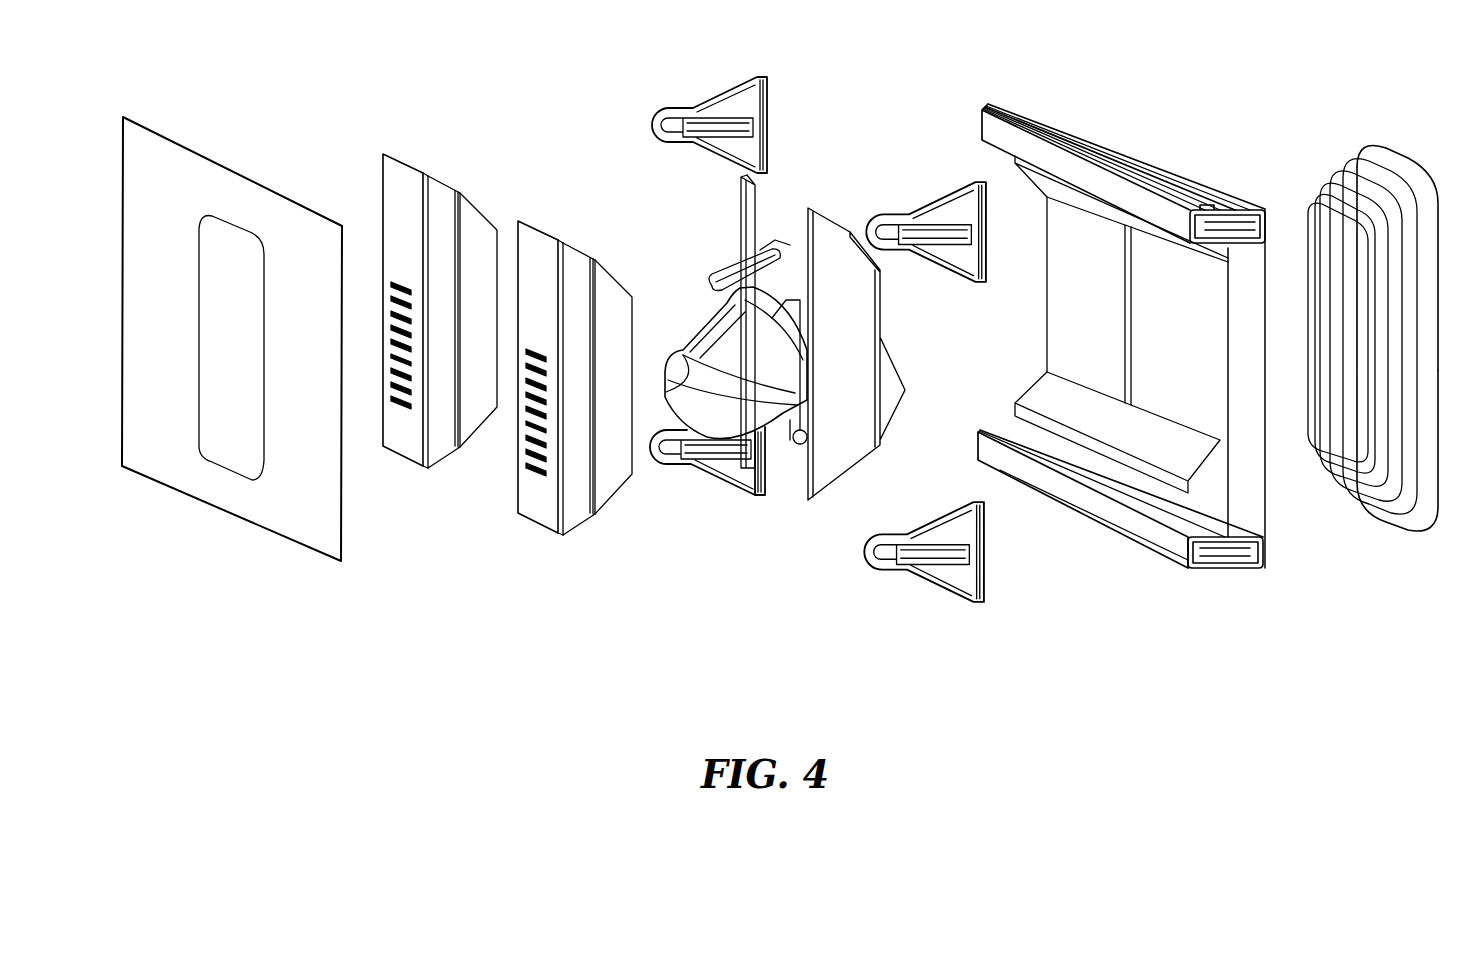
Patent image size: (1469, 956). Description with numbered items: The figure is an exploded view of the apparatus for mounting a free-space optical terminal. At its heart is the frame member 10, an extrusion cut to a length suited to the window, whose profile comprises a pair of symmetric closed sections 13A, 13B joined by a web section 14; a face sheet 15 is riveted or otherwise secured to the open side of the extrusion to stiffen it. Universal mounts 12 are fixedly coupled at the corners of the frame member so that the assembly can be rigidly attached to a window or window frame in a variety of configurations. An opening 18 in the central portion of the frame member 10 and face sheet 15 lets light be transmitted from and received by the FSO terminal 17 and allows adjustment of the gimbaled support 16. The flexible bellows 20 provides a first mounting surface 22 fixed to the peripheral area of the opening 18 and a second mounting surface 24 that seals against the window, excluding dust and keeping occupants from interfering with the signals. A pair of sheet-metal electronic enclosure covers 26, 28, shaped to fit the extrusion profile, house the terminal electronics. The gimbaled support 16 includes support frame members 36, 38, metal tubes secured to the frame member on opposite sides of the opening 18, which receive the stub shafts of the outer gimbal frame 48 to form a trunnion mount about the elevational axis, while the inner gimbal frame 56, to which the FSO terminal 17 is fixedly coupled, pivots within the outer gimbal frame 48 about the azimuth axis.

The frame member 10 is at (1147, 349).
The universal mounts 12 is at (708, 84).
The closed section 13A is at (1243, 210).
The closed section 13B is at (1248, 560).
The web section 14 is at (1245, 380).
The face sheet 15 is at (212, 171).
The gimbaled support 16 is at (716, 353).
The FSO terminal 17 is at (710, 413).
The opening 18 is at (1147, 328).
The flexible bellows 20 is at (1376, 517).
The first mounting surface 22 is at (1347, 332).
The outer gasket flange 24 is at (1406, 128).
The electronic enclosure cover 26 is at (407, 173).
The electronic enclosure cover 28 is at (543, 243).
The support frame member 36 is at (873, 317).
The support frame member 38 is at (765, 195).
The outer gimbal frame 48 is at (710, 285).
The inner gimbal frame 56 is at (697, 343).